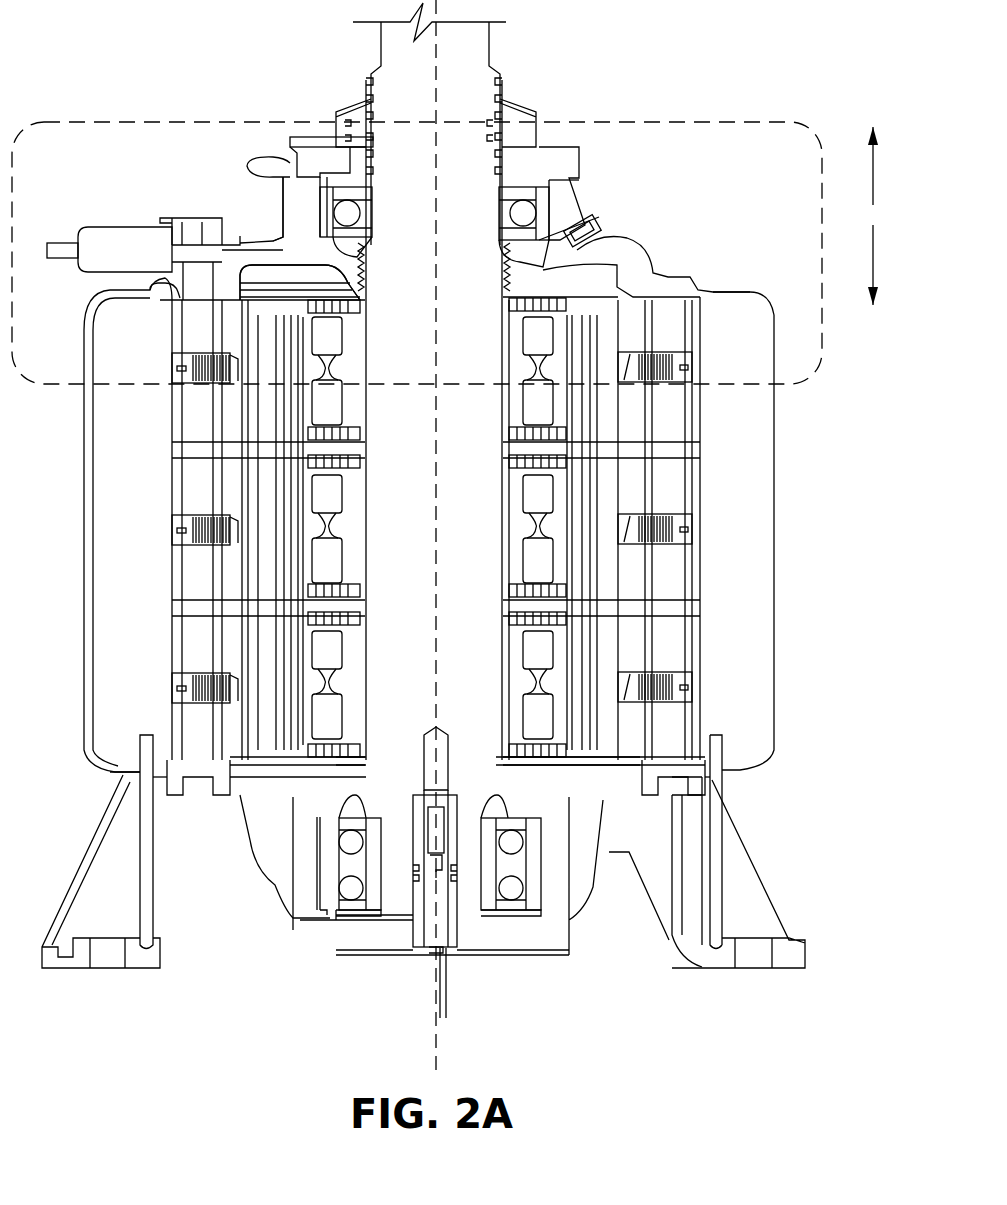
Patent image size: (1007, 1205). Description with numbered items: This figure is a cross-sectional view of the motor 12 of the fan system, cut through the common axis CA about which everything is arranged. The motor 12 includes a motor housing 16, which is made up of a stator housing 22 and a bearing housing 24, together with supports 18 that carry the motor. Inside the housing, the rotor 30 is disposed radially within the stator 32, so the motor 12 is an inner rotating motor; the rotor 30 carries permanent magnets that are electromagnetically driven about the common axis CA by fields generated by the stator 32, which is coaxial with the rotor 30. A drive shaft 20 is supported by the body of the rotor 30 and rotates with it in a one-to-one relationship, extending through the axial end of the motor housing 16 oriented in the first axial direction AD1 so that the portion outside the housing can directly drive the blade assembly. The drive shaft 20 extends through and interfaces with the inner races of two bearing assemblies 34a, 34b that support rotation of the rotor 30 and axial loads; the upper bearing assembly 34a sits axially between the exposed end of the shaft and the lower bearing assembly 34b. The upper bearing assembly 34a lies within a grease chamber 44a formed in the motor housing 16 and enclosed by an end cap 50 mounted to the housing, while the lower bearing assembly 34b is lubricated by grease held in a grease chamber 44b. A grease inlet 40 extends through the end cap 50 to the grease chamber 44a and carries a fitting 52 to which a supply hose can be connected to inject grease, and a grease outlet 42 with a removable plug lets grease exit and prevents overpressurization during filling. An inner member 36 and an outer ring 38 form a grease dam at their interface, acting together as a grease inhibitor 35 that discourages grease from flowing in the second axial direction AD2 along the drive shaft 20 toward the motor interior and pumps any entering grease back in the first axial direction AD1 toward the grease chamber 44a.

The motor 12 is at (181, 100).
The motor housing 16 is at (671, 258).
The supports 18 is at (755, 913).
The drive shaft 20 is at (463, 493).
The stator housing 22 is at (729, 278).
The bearing housing 24 is at (578, 922).
The rotor 30 is at (346, 300).
The stator 32 is at (200, 278).
The bearing assembly 34a is at (559, 210).
The bearing assembly 34b is at (511, 932).
The grease inhibitor 35 is at (273, 265).
The inner member 36 is at (351, 228).
The outer ring 38 is at (318, 160).
The grease inlet 40 is at (313, 135).
The grease outlet 42 is at (585, 255).
The grease chamber 44a is at (519, 165).
The grease chamber 44b is at (486, 945).
The end cap 50 is at (560, 153).
The fitting 52 is at (281, 150).
The common axis CA is at (436, 104).
The first axial direction AD1 is at (873, 190).
The second axial direction AD2 is at (873, 270).